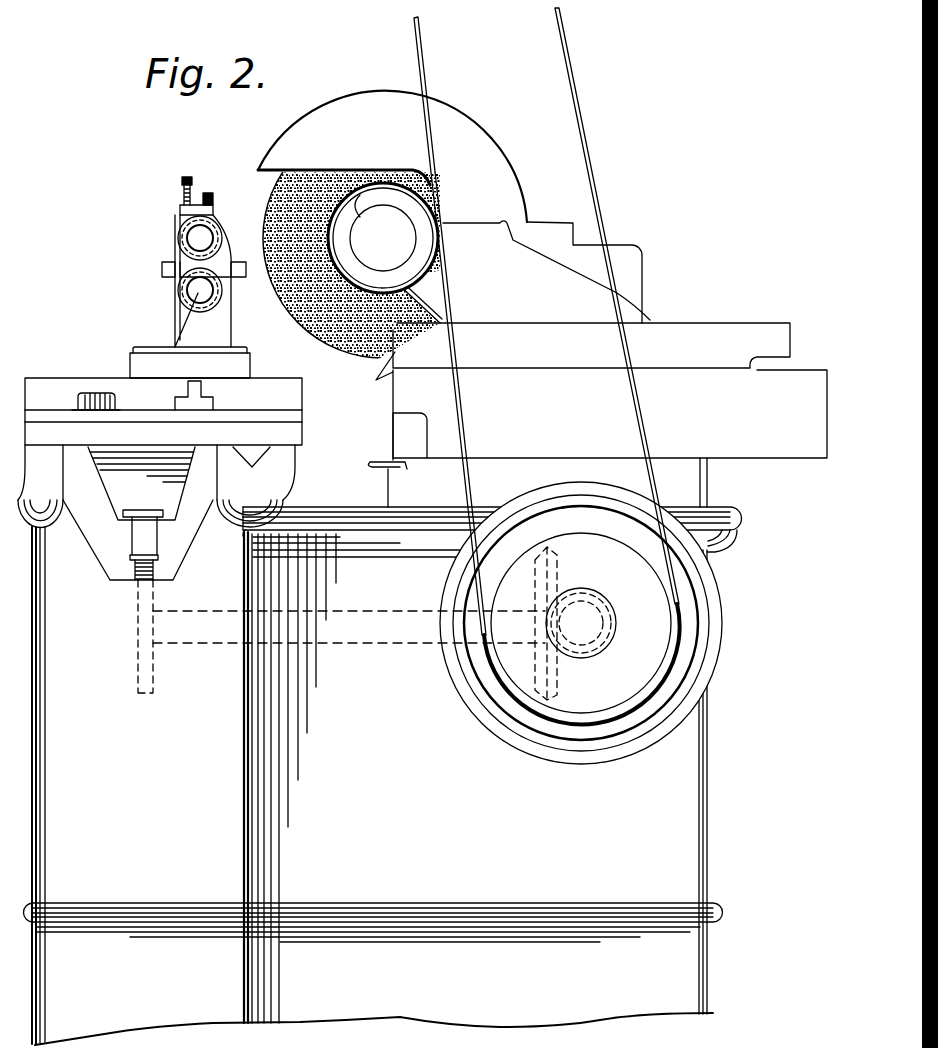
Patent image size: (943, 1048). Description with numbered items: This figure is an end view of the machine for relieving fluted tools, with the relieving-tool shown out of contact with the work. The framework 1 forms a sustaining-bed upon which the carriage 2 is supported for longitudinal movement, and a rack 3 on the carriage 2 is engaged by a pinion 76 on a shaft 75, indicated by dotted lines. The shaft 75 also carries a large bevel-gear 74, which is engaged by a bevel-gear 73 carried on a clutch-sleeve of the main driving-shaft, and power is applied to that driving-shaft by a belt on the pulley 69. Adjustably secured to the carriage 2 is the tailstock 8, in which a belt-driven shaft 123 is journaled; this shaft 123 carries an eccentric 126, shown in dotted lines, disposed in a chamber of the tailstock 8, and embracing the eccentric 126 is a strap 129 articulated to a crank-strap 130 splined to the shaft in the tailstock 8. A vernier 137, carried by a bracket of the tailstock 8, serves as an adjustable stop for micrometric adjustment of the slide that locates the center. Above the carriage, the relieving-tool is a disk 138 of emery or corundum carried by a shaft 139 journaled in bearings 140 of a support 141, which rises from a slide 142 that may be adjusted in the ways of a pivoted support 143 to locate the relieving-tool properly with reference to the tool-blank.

The framework 1 is at (383, 776).
The carriage 2 is at (160, 479).
The rack 3 is at (143, 545).
The tailstock 8 is at (232, 322).
The pulley 69 is at (577, 737).
The bevel-gear 73 is at (587, 660).
The large bevel-gear 74 is at (548, 564).
The shaft 75 is at (363, 645).
The pinion 76 is at (157, 677).
The shaft 123 is at (198, 293).
The eccentric 126 is at (181, 278).
The strap 129 is at (190, 364).
The crank-strap 130 is at (216, 233).
The vernier 137 is at (181, 190).
The disk 138 is at (287, 187).
The shaft 139 is at (383, 238).
The bearings 140 is at (383, 190).
The support 141 is at (546, 272).
The slide 142 is at (591, 345).
The pivoted support 143 is at (597, 438).